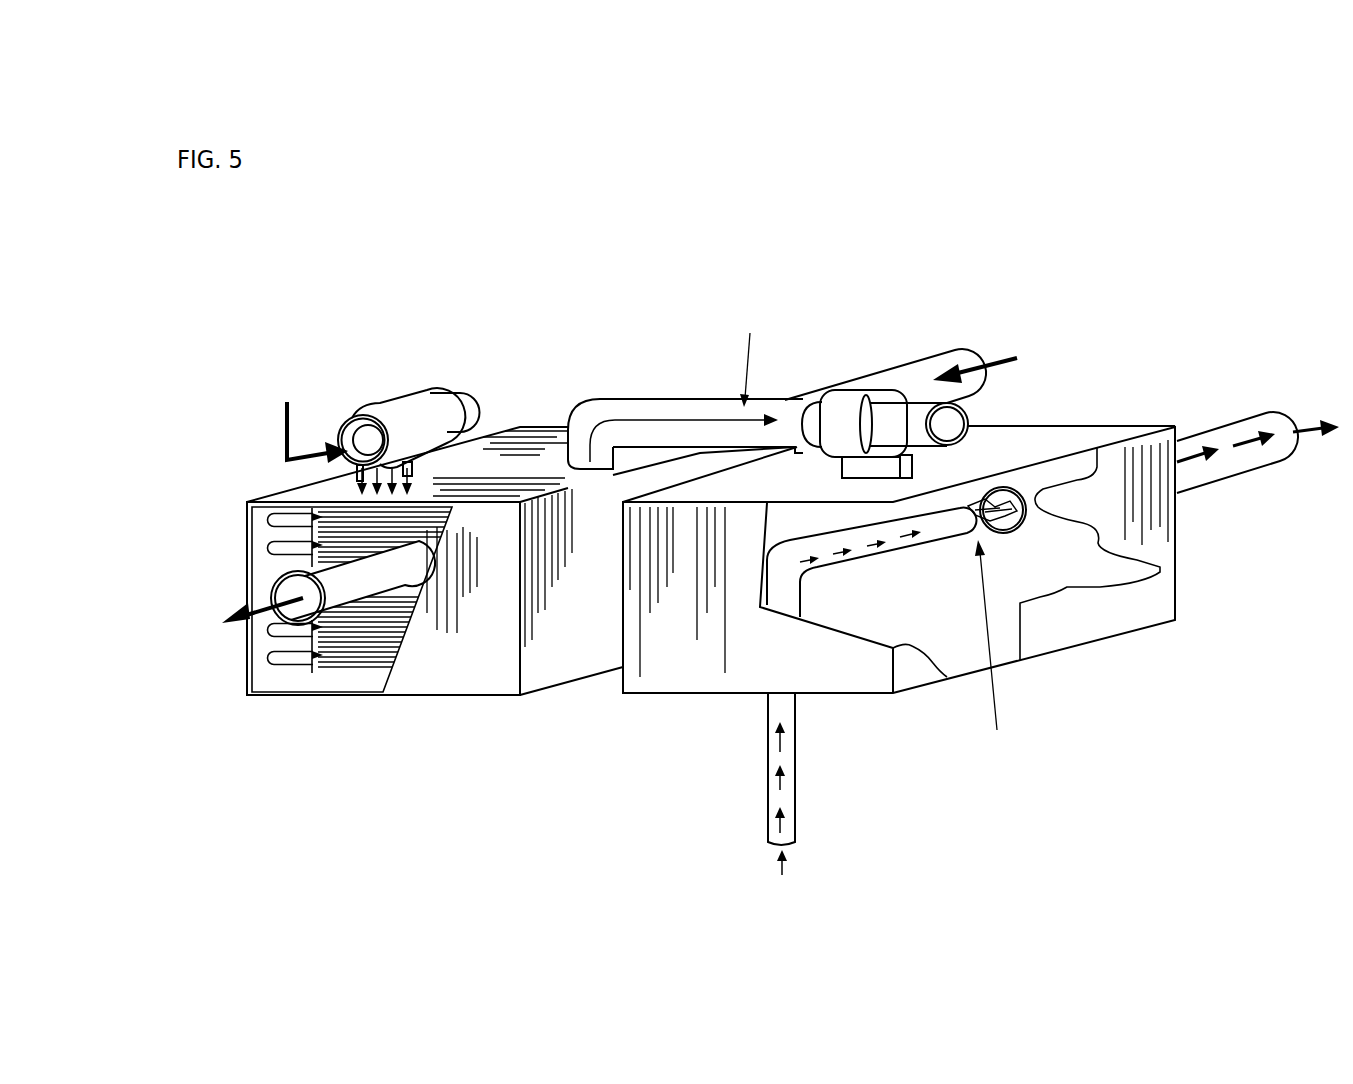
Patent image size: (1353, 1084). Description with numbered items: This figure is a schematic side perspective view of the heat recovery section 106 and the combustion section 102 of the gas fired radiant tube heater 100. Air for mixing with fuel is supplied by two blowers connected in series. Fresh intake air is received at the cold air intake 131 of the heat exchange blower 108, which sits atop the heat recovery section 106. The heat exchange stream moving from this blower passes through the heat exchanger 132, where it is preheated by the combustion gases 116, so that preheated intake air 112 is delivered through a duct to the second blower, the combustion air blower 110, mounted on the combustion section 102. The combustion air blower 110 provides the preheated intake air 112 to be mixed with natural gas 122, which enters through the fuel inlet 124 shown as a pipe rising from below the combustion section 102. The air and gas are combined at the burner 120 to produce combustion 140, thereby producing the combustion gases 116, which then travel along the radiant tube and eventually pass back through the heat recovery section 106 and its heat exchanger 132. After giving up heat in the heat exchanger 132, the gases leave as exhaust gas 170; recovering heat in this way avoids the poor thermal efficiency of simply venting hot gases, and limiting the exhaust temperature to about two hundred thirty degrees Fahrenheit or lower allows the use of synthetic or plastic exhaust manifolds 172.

The gas fired radiant tube heater 100 is at (1122, 130).
The combustion section 102 is at (1137, 598).
The heat recovery section 106 is at (480, 673).
The heat exchange blower 108 is at (418, 412).
The combustion air blower 110 is at (853, 405).
The preheated intake air 112 is at (728, 408).
The combustion gases 116 is at (1257, 432).
The burner 120 is at (1007, 530).
The natural gas 122 is at (797, 818).
The fuel inlet 124 is at (772, 737).
The cold air intake 131 is at (350, 437).
The heat exchanger 132 is at (358, 657).
The combustion 140 is at (997, 520).
The exhaust gas 170 is at (300, 600).
The exhaust manifolds 172 is at (340, 580).